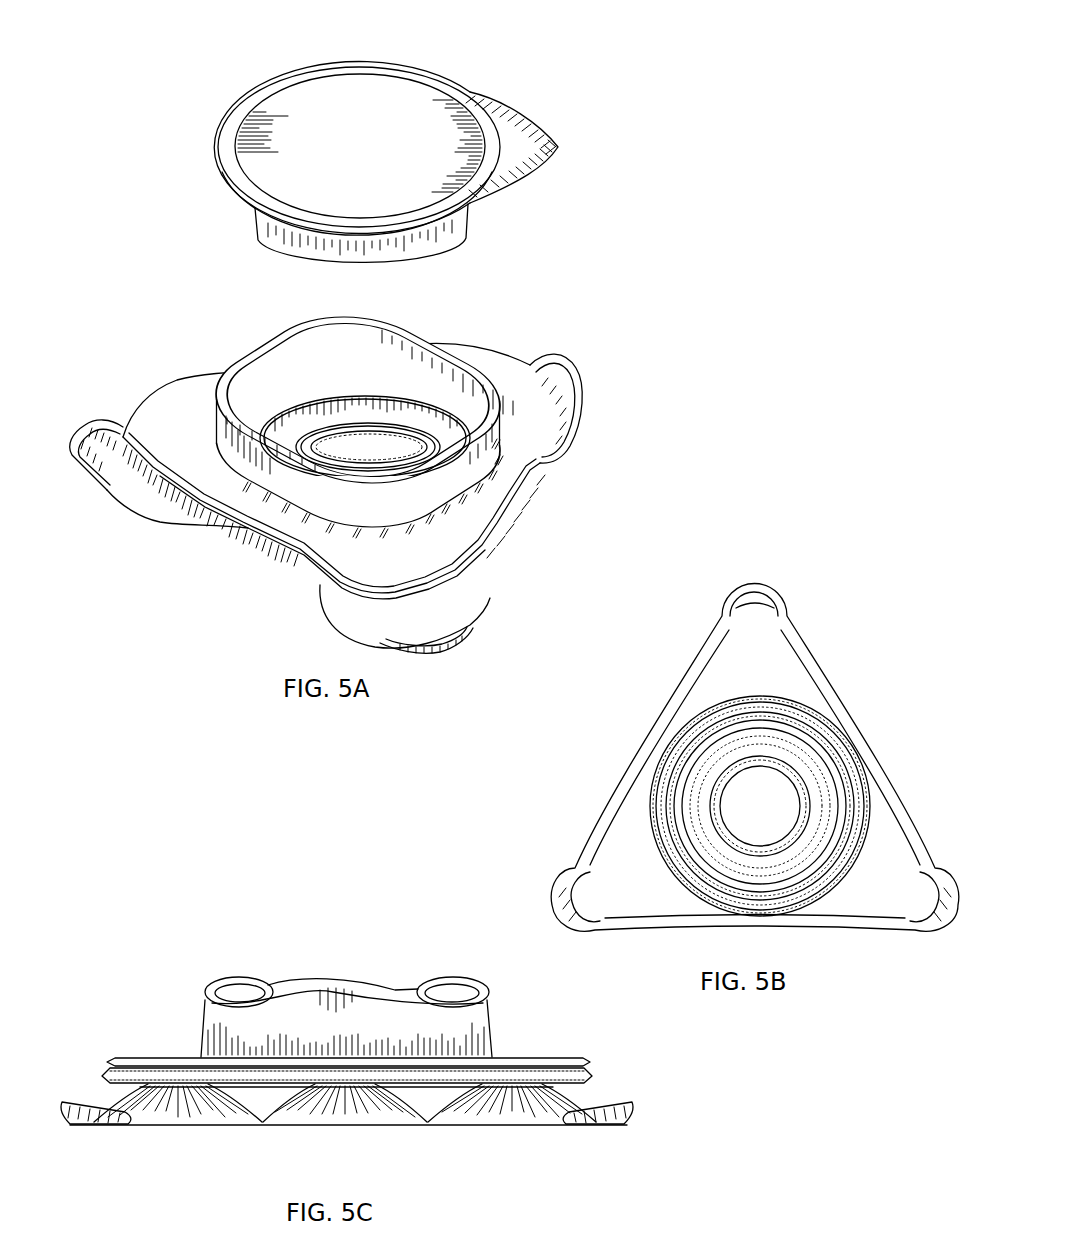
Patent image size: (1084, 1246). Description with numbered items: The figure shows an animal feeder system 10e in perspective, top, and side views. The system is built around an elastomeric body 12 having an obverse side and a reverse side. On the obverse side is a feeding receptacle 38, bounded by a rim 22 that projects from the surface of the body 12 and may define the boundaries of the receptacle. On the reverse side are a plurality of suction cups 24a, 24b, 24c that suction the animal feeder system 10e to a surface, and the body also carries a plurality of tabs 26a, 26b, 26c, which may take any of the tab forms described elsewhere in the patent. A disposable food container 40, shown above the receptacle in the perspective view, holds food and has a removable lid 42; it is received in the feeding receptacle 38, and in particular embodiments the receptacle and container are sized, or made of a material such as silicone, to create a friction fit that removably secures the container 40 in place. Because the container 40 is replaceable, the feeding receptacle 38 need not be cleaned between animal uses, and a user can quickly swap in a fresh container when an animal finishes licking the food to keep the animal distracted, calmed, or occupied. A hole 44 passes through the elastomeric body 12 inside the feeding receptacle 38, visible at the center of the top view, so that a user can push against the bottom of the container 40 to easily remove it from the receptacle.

In FIG. 5A, the animal feeder system 10e is at (610, 60).
In FIG. 5B, the animal feeder system 10e is at (826, 565).
In FIG. 5C, the animal feeder system 10e is at (144, 920).
In FIG. 5A, the elastomeric body 12 is at (349, 489).
In FIG. 5B, the elastomeric body 12 is at (684, 698).
In FIG. 5C, the elastomeric body 12 is at (336, 1106).
In FIG. 5A, the rim 22 is at (402, 327).
In FIG. 5B, the rim 22 is at (858, 796).
In FIG. 5C, the rim 22 is at (206, 1016).
In FIG. 5A, the suction cup 24a is at (583, 412).
In FIG. 5C, the suction cup 24a is at (338, 1130).
In FIG. 5A, the suction cup 24b is at (148, 520).
In FIG. 5C, the suction cup 24b is at (178, 1130).
In FIG. 5A, the suction cup 24c is at (316, 602).
In FIG. 5C, the suction cup 24c is at (506, 1130).
In FIG. 5A, the tab 26a is at (560, 356).
In FIG. 5A, the tab 26b is at (95, 418).
In FIG. 5C, the tab 26b is at (96, 1113).
In FIG. 5A, the tab 26c is at (440, 651).
In FIG. 5C, the tab 26c is at (598, 1113).
In FIG. 5A, the feeding receptacle 38 is at (358, 412).
In FIG. 5B, the feeding receptacle 38 is at (744, 806).
In FIG. 5C, the feeding receptacle 38 is at (382, 1005).
In FIG. 5A, the disposable food container 40 is at (345, 159).
In FIG. 5A, the removable lid 42 is at (471, 95).
In FIG. 5A, the hole 44 is at (369, 447).
In FIG. 5B, the hole 44 is at (760, 806).